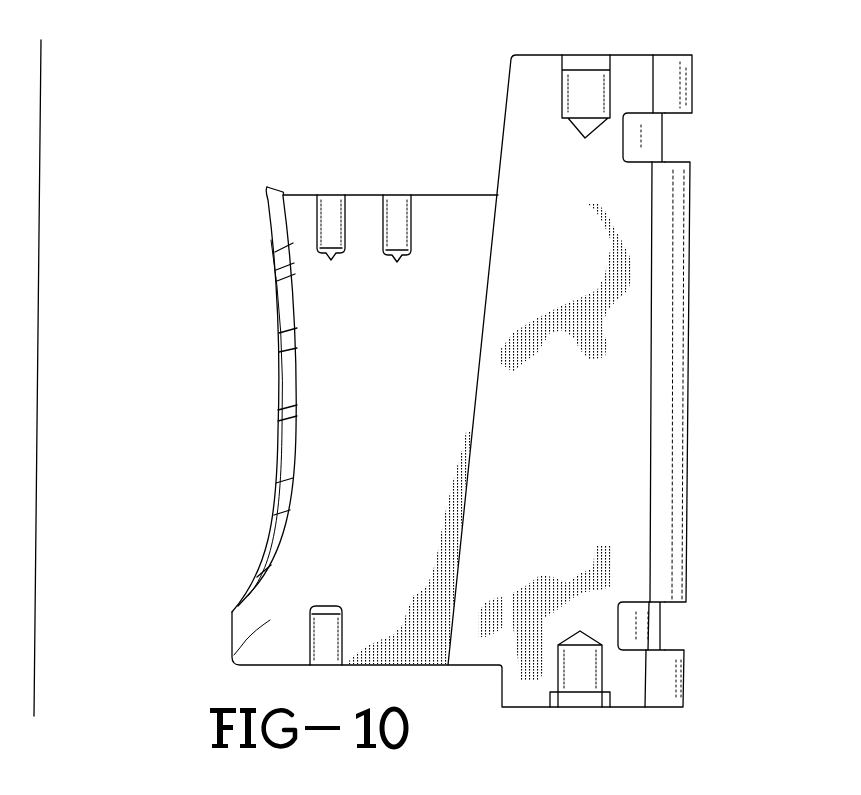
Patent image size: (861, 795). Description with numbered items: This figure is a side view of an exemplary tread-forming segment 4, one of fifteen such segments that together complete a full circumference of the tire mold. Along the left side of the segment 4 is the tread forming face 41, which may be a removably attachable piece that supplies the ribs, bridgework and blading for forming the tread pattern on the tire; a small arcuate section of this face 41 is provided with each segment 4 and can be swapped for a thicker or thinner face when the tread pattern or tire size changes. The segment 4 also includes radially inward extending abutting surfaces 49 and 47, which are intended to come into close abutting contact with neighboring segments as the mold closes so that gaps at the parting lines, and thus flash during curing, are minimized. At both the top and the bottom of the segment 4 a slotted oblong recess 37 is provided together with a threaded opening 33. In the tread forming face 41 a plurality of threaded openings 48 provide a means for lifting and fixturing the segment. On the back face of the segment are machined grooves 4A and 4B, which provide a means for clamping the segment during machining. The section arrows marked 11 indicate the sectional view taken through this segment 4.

The tread-forming segment 4 is at (655, 304).
The machined groove 4A is at (664, 148).
The machined groove 4B is at (656, 637).
The section line 11 is at (41, 40).
The threaded opening 33 is at (595, 94).
The slotted oblong recess 37 is at (562, 60).
The tread forming face 41 is at (277, 364).
The abutting surface 47 is at (606, 426).
The threaded openings 48 is at (333, 215).
The abutting surface 49 is at (234, 655).